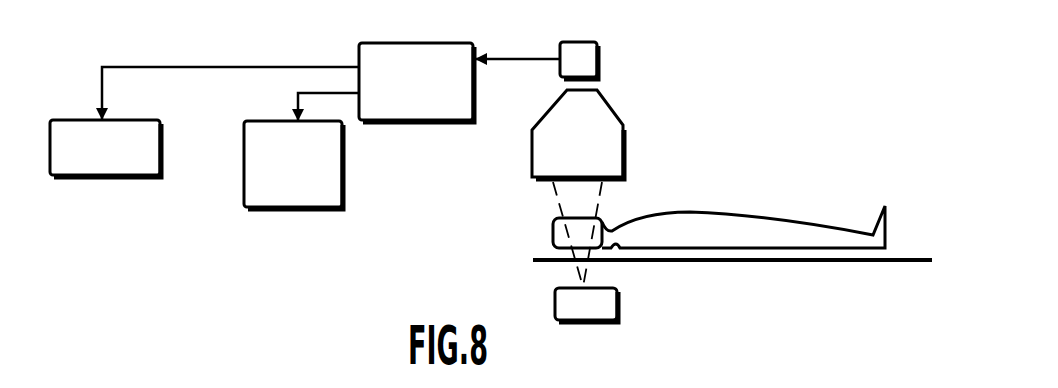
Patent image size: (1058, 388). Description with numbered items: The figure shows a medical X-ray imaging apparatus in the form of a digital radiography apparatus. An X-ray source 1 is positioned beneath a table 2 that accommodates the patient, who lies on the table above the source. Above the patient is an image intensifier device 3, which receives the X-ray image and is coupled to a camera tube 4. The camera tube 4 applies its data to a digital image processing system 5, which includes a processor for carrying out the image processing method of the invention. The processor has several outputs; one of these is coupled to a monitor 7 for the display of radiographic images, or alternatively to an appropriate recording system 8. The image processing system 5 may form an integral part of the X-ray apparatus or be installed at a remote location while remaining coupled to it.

The X-ray source 1 is at (573, 303).
The table 2 is at (870, 262).
The image intensifier device 3 is at (600, 150).
The camera tube 4 is at (585, 62).
The digital image processing system 5 is at (415, 100).
The monitor 7 is at (267, 173).
The recording system 8 is at (100, 155).